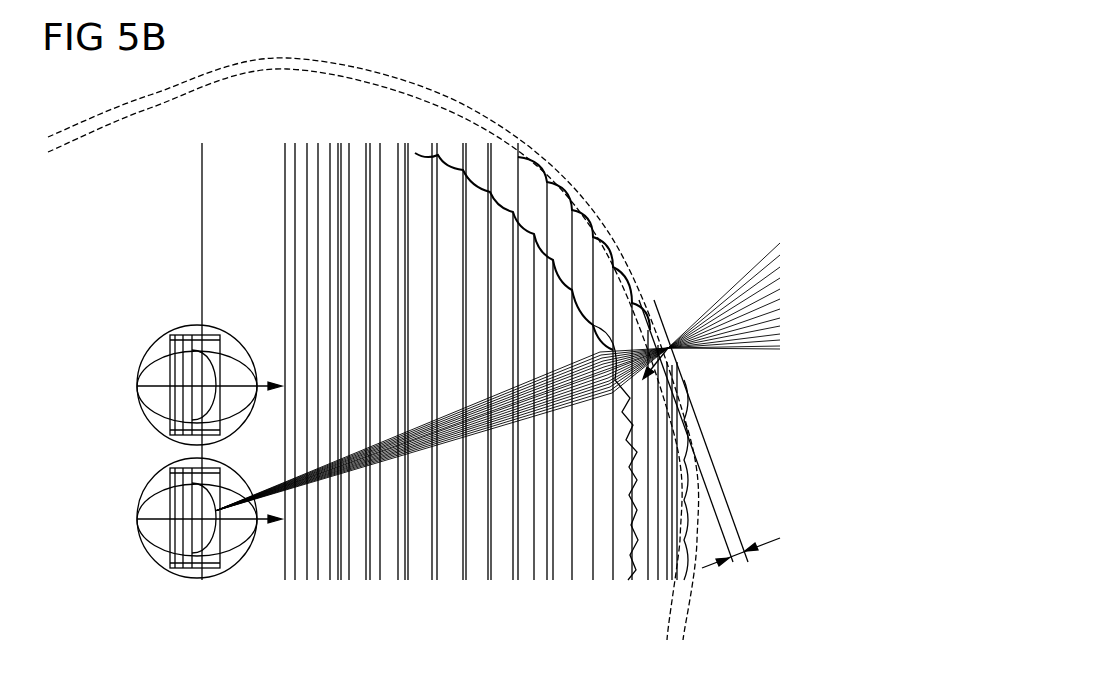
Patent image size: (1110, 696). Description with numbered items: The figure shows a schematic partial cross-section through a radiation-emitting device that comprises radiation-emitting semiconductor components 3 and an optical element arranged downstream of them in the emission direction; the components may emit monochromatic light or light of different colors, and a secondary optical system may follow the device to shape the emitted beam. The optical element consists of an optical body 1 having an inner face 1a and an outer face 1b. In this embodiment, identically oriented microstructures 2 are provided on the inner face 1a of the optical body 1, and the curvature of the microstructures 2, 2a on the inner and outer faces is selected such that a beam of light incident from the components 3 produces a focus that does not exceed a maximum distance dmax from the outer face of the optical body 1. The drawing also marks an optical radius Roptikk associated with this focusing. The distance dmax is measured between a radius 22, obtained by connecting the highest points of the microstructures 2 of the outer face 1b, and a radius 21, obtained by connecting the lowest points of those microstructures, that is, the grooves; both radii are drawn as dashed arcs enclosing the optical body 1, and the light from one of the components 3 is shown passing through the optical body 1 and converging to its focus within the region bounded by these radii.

The optical body 1 is at (522, 345).
The inner face 1a is at (627, 560).
The outer face 1b is at (692, 490).
The microstructures 2 is at (540, 152).
The microstructures 2a is at (487, 212).
The radiation-emitting semiconductor components 3 is at (142, 488).
The radius 21 is at (276, 72).
The radius 22 is at (442, 95).
The optical radius Roptikk is at (625, 387).
The maximum distance dmax is at (738, 552).